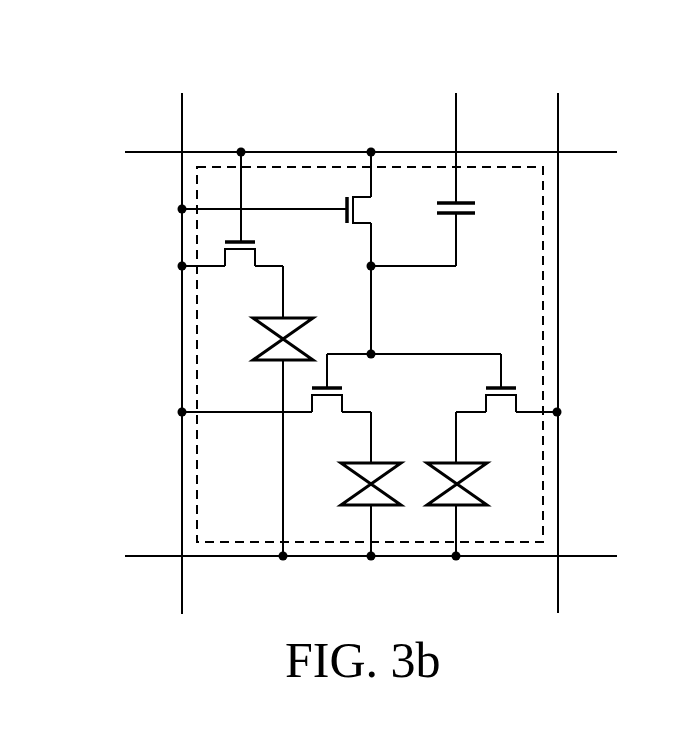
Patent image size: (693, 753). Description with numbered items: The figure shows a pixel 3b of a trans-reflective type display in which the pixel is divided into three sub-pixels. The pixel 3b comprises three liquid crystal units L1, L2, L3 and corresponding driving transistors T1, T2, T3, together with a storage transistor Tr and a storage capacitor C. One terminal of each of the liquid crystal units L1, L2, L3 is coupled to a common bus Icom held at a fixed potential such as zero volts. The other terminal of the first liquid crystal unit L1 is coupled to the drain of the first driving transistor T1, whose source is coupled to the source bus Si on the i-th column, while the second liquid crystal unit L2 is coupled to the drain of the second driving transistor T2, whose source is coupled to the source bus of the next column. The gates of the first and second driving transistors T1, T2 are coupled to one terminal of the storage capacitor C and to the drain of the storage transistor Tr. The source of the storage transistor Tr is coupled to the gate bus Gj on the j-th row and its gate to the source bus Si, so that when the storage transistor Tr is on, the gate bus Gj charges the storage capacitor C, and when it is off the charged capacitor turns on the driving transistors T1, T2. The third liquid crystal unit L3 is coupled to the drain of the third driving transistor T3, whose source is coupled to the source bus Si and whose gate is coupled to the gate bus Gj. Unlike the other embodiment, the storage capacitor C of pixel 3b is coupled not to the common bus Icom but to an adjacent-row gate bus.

The pixel 3b is at (543, 266).
The storage transistor Tr is at (373, 210).
The storage capacitor C is at (476, 210).
The first driving transistor T1 is at (327, 405).
The second driving transistor T2 is at (500, 405).
The third driving transistor T3 is at (240, 270).
The first liquid crystal unit L1 is at (346, 503).
The second liquid crystal unit L2 is at (470, 506).
The third liquid crystal unit L3 is at (264, 362).
The source bus Si is at (177, 329).
The gate bus Gj is at (389, 151).
The common bus Icom is at (402, 555).